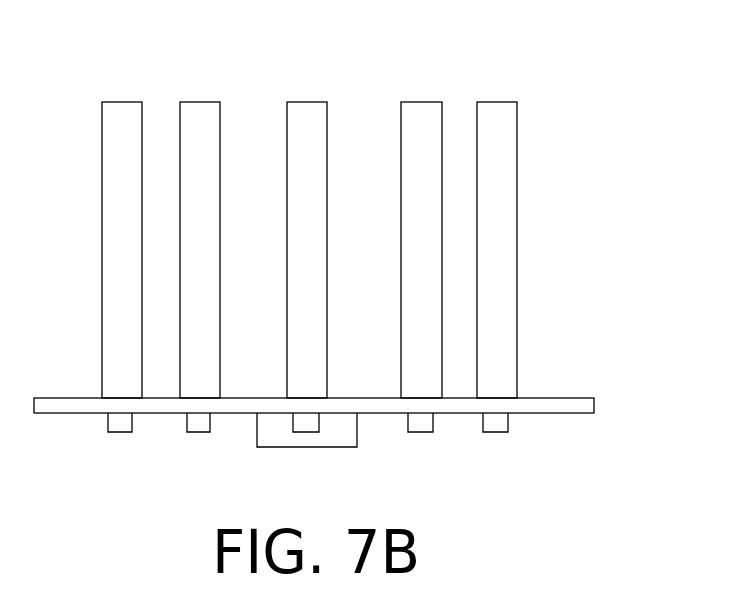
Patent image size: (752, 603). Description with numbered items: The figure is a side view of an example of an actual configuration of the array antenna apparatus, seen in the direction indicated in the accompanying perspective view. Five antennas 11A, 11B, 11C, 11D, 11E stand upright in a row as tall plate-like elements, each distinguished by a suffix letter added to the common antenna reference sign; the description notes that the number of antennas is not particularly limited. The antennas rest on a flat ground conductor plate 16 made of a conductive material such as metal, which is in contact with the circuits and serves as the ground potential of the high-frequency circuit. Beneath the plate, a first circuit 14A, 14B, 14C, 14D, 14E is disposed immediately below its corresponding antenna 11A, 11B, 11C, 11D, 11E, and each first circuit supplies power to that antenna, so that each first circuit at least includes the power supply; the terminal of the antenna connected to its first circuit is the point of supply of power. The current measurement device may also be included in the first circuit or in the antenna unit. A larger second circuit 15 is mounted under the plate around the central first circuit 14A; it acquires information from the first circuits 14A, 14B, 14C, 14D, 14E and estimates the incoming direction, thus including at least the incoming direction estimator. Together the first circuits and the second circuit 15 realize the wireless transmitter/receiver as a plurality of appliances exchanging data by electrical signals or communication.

The antenna 11A is at (305, 102).
The antenna 11B is at (124, 102).
The antenna 11C is at (200, 102).
The antenna 11D is at (421, 102).
The antenna 11E is at (491, 102).
The first circuit 14A is at (302, 448).
The first circuit 14B is at (118, 433).
The first circuit 14C is at (198, 433).
The first circuit 14D is at (422, 433).
The first circuit 14E is at (494, 433).
The second circuit 15 is at (320, 448).
The ground conductor plate 16 is at (596, 400).